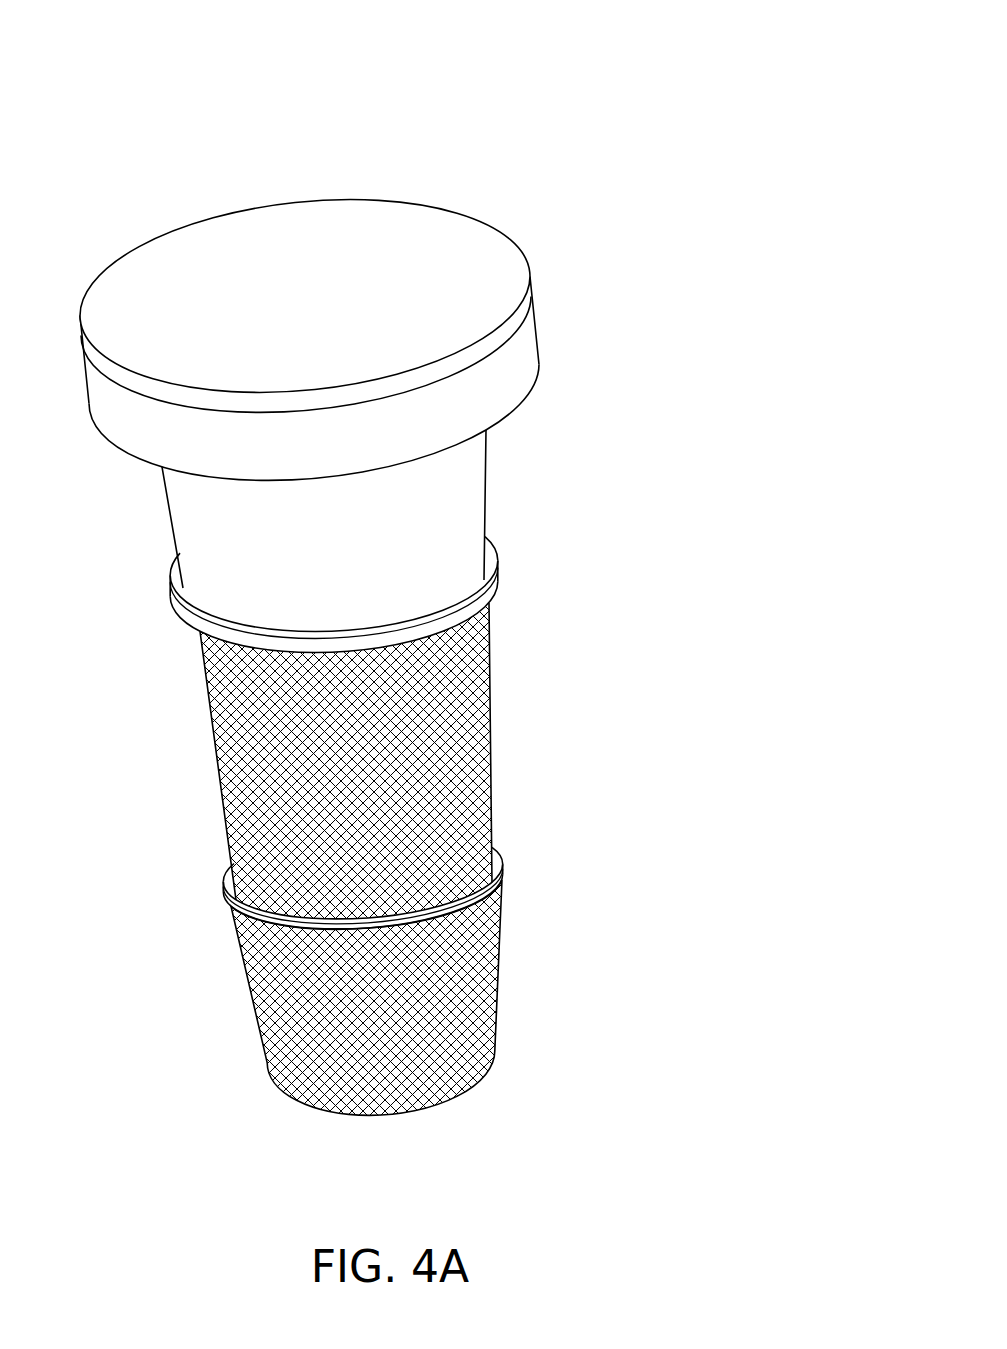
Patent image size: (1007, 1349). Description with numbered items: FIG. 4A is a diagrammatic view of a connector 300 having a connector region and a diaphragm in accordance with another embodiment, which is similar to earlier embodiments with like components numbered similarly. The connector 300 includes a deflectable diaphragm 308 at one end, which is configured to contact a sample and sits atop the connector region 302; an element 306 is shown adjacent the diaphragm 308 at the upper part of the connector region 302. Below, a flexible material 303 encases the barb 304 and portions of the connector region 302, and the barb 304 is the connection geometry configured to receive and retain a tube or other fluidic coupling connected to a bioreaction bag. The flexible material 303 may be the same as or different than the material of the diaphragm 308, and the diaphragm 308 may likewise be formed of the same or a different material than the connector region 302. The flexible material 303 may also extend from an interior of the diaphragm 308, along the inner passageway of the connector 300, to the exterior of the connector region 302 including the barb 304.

The connector 300 is at (612, 126).
The connector region 302 is at (490, 527).
The flexible material 303 is at (433, 778).
The barb 304 is at (482, 985).
The cap 306 is at (538, 388).
The diaphragm 308 is at (518, 245).